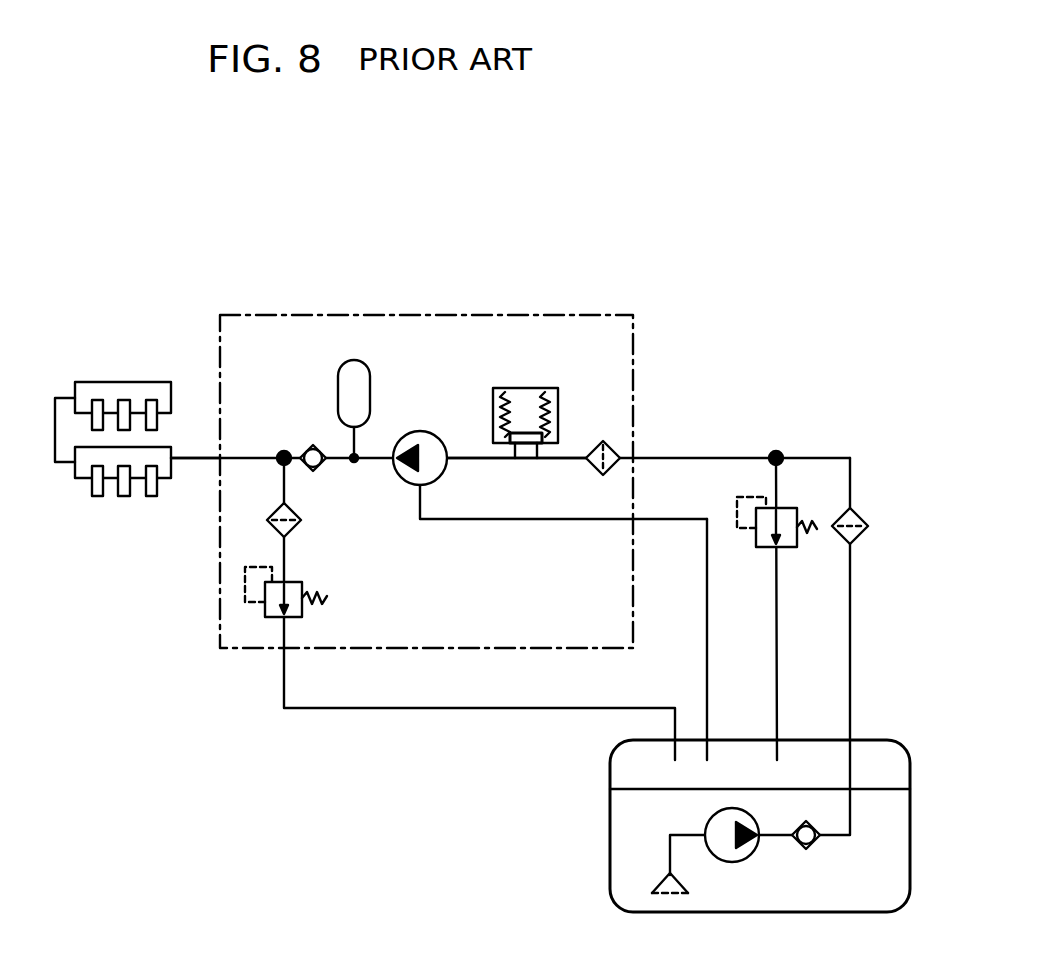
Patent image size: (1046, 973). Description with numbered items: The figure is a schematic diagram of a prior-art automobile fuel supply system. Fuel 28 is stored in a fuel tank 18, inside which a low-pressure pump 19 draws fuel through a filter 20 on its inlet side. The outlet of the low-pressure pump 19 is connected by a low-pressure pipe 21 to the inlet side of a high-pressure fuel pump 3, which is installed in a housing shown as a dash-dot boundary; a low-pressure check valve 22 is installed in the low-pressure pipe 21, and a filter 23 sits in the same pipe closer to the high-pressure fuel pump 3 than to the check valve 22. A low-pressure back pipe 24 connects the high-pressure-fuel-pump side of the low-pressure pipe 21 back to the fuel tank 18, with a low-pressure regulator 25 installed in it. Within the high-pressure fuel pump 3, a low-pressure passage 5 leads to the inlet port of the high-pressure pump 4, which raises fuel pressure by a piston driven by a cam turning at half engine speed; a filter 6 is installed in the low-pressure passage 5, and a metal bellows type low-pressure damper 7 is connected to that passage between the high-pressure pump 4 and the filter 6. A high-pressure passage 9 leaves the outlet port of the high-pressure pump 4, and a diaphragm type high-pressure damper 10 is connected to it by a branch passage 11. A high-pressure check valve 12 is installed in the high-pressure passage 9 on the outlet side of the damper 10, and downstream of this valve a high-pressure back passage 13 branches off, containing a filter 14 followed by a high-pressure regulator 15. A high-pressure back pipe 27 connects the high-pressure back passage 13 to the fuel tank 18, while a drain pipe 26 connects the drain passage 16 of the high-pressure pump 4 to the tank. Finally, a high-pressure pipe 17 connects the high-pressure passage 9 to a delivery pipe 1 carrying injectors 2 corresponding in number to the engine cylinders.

The delivery pipe 1 is at (105, 388).
The injectors 2 is at (160, 418).
The high-pressure fuel pump 3 is at (233, 316).
The high-pressure pump 4 is at (420, 432).
The low-pressure passage 5 is at (467, 457).
The filter 6 is at (603, 437).
The low-pressure damper 7 is at (557, 388).
The high-pressure passage 9 is at (250, 458).
The high-pressure damper 10 is at (347, 360).
The branch passage 11 is at (360, 440).
The high-pressure check valve 12 is at (305, 447).
The high-pressure back passage 13 is at (285, 555).
The filter 14 is at (299, 520).
The high-pressure regulator 15 is at (300, 618).
The drain passage 16 is at (483, 520).
The high-pressure pipe 17 is at (200, 463).
The fuel tank 18 is at (608, 765).
The low-pressure pump 19 is at (732, 862).
The filter 20 is at (652, 882).
The low-pressure pipe 21 is at (852, 647).
The low-pressure check valve 22 is at (817, 850).
The filter 23 is at (857, 517).
The low-pressure back pipe 24 is at (777, 647).
The low-pressure regulator 25 is at (787, 508).
The drain pipe 26 is at (707, 575).
The high-pressure back pipe 27 is at (370, 712).
The fuel 28 is at (625, 789).